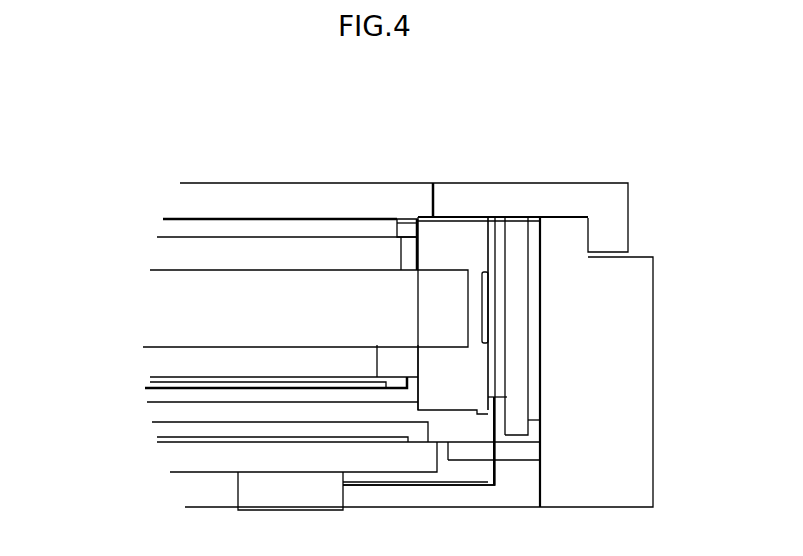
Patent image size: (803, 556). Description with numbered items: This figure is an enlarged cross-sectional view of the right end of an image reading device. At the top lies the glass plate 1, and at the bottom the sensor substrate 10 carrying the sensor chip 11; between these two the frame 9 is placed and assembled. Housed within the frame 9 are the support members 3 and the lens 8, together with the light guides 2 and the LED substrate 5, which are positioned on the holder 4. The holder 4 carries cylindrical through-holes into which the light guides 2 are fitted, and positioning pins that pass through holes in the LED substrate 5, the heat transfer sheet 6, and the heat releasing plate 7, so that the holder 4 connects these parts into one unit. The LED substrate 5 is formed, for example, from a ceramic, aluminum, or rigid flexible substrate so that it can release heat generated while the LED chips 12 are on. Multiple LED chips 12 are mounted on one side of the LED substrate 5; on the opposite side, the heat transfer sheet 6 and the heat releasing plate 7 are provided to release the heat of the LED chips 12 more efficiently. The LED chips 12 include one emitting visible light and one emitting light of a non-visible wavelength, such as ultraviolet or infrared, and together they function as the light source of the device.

The glass plate 1 is at (185, 196).
The light guides 2 is at (165, 292).
The support members 3 is at (150, 367).
The holder 4 is at (440, 233).
The LED substrate 5 is at (492, 228).
The heat transfer sheet 6 is at (503, 232).
The heat releasing plate 7 is at (522, 237).
The lens 8 is at (163, 260).
The frame 9 is at (637, 267).
The sensor substrate 10 is at (163, 462).
The sensor chip 11 is at (157, 441).
The LED chips 12 is at (488, 307).